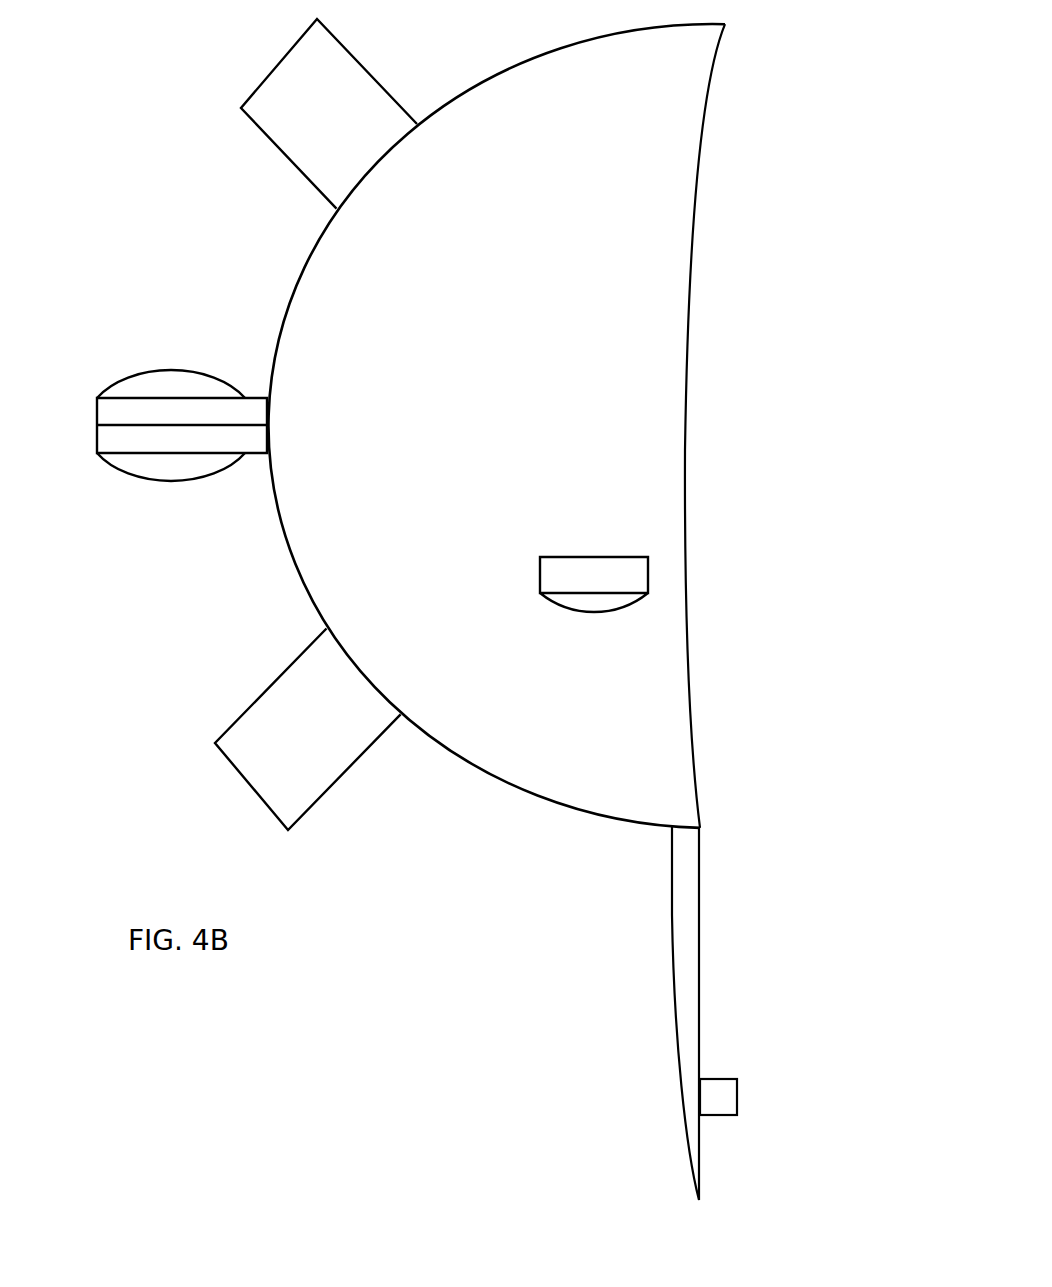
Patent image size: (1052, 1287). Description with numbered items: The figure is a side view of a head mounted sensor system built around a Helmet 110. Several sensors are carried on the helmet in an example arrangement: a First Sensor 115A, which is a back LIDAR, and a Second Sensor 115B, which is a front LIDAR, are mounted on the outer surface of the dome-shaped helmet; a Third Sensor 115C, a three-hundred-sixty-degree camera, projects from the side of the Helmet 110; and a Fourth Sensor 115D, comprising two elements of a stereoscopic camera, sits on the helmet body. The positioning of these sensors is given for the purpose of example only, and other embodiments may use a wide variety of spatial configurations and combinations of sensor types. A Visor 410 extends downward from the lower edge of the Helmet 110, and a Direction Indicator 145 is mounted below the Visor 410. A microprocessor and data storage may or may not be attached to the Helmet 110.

The helmet 110 is at (317, 238).
The first sensor 115A is at (373, 77).
The second sensor 115B is at (360, 755).
The third sensor 115C is at (96, 438).
The fourth sensor 115D is at (618, 556).
The visor 410 is at (670, 918).
The direction indicator 145 is at (728, 1079).